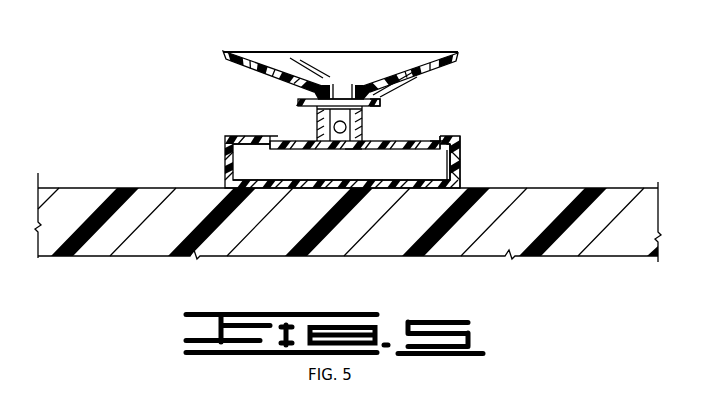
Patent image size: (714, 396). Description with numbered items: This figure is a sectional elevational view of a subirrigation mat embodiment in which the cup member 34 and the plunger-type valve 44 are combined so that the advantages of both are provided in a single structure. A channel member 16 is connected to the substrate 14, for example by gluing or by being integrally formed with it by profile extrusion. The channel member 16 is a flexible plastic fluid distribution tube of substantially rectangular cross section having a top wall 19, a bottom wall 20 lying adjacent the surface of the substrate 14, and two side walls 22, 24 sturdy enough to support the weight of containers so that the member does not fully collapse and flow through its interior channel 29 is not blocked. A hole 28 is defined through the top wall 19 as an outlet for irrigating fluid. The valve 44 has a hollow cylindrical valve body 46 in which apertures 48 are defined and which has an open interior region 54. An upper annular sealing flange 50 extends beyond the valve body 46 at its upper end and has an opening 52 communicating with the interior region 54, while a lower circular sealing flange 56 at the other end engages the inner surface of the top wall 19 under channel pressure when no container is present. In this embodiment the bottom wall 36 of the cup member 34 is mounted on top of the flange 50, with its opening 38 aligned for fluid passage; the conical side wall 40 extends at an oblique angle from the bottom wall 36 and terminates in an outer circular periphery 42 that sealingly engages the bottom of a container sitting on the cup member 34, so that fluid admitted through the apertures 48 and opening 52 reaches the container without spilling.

The substrate 14 is at (617, 212).
The channel member 16 is at (463, 155).
The top wall 19 is at (450, 141).
The bottom wall 20 is at (400, 178).
The side wall 22 is at (227, 160).
The side wall 24 is at (462, 152).
The hole 28 is at (367, 138).
The interior channel 29 is at (450, 171).
The cup member 34 is at (383, 51).
The bottom wall 36 is at (318, 89).
The opening 38 is at (342, 83).
The conical side wall 40 is at (275, 57).
The outer circular periphery 42 is at (456, 55).
The plunger-type valve 44 is at (348, 151).
The valve body 46 is at (298, 102).
The apertures 48 is at (316, 126).
The upper annular sealing flange 50 is at (381, 103).
The opening 52 is at (438, 142).
The open interior region 54 is at (338, 136).
The lower circular sealing flange 56 is at (285, 151).